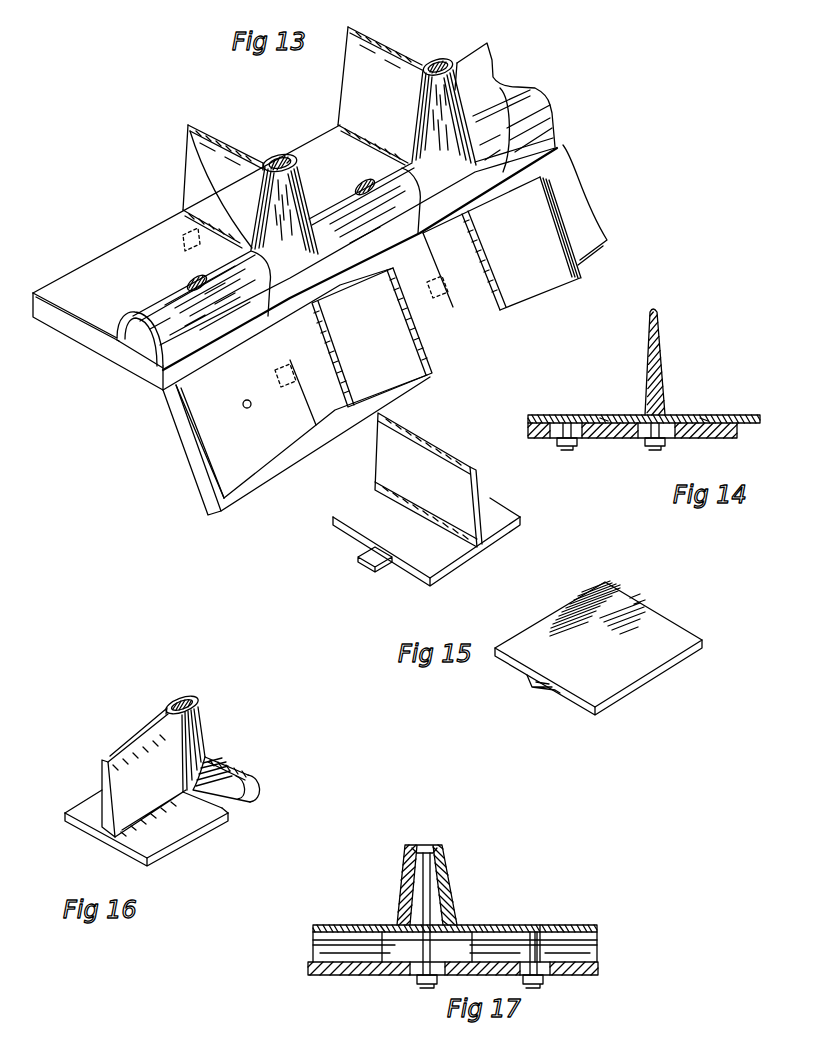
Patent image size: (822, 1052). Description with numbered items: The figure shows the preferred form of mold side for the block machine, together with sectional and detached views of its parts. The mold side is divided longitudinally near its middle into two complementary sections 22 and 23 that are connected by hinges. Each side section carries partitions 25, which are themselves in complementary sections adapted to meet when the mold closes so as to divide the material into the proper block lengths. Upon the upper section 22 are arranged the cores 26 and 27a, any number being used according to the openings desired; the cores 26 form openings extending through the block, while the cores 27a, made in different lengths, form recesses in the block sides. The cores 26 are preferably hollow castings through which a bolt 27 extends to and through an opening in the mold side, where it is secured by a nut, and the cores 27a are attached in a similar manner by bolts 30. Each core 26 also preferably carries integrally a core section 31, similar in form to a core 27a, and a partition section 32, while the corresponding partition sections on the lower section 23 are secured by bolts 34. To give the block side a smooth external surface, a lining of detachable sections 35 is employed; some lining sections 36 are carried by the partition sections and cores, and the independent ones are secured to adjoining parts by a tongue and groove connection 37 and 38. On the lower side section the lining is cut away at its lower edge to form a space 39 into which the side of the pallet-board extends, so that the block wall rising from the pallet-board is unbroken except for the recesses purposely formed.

In FIG. 13, the upper mold side section 22 is at (40, 313).
In FIG. 13, the lower mold side section 23 is at (190, 455).
In FIG. 13, the partitions 25 is at (428, 378).
In FIG. 13, the cores 26 is at (294, 150).
In FIG. 13, the bolt 27 is at (267, 153).
In FIG. 13, the cores 27a is at (148, 307).
In FIG. 13, the bolts 30 is at (185, 263).
In FIG. 13, the core section 31 is at (190, 130).
In FIG. 13, the partition section 32 is at (213, 130).
In FIG. 14, the bolts 34 is at (645, 415).
In FIG. 13, the lining sections 35 is at (242, 473).
In FIG. 13, the lining sections 36 is at (180, 220).
In FIG. 13, the tongue 37 is at (382, 568).
In FIG. 15, the groove 38 is at (527, 680).
In FIG. 13, the space 39 is at (283, 460).